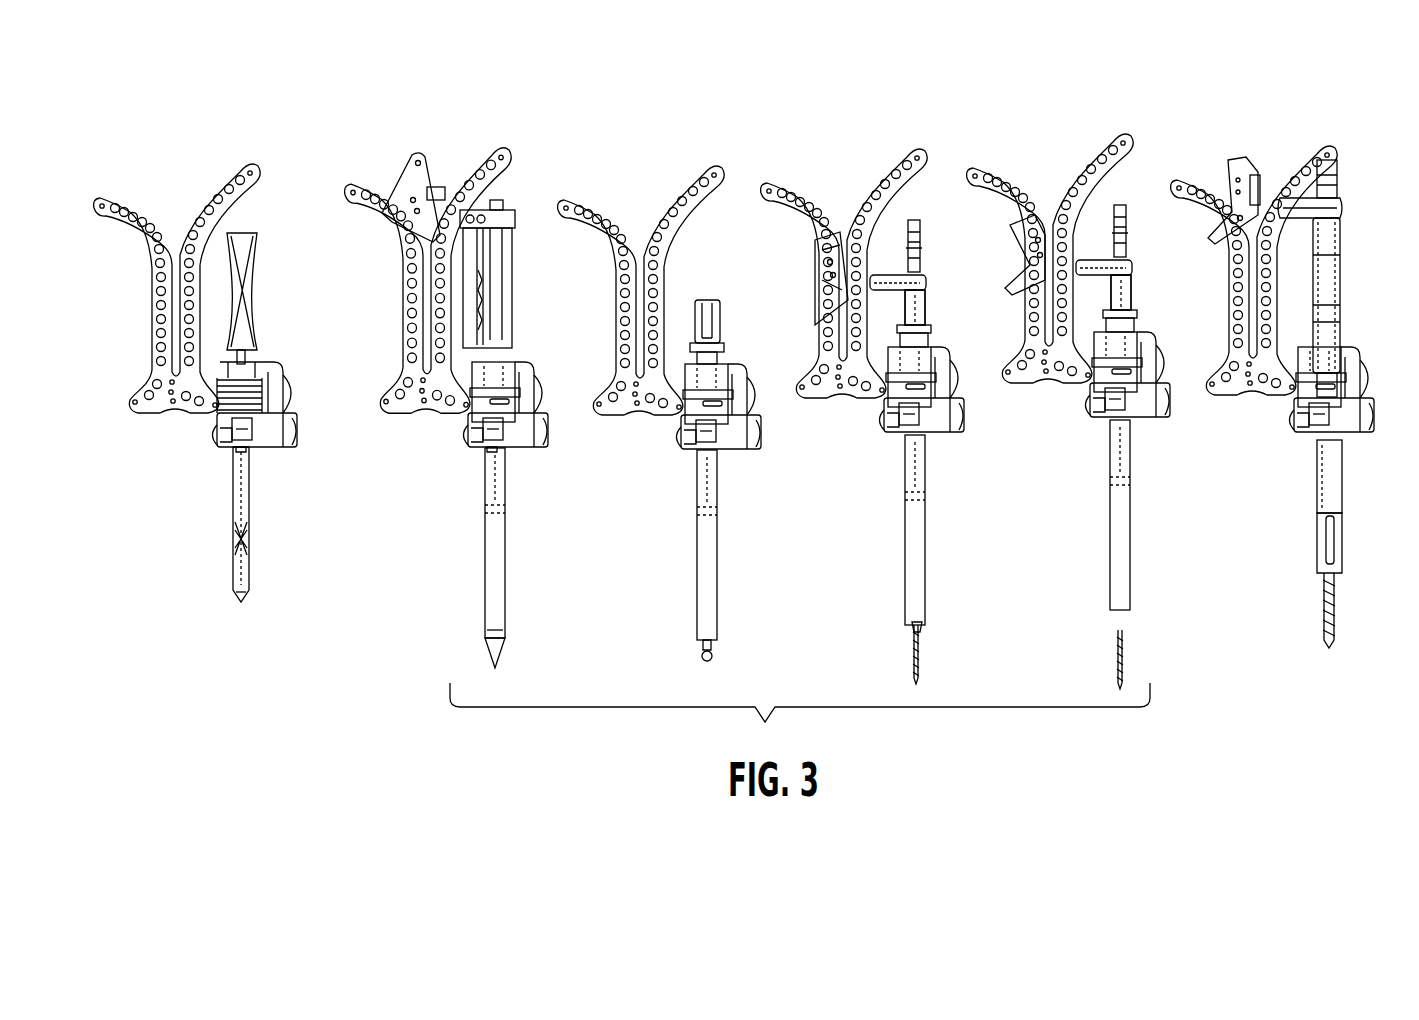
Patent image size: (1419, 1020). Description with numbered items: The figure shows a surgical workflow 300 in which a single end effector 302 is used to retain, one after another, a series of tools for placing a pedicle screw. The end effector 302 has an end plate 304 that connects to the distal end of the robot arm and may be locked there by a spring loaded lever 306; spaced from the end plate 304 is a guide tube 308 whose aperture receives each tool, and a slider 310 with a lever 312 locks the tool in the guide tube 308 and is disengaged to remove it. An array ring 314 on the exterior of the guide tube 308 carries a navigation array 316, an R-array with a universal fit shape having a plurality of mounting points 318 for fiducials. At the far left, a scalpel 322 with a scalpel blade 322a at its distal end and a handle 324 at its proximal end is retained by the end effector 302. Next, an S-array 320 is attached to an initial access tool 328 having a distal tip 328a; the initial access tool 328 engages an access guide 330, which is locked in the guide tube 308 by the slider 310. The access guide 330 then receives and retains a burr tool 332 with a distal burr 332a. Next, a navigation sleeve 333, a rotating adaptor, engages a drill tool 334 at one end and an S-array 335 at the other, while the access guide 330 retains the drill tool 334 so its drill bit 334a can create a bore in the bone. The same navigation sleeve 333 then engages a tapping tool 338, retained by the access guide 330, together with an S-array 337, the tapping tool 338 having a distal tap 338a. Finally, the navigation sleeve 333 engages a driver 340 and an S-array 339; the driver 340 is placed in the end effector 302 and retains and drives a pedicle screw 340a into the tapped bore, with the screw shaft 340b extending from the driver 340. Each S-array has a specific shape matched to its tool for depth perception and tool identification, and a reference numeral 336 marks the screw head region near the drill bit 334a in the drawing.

The surgical workflow 300 is at (255, 95).
The end effector 302 is at (816, 403).
The end plate 304 is at (428, 429).
The spring loaded lever 306 is at (401, 346).
The guide tube 308 is at (321, 488).
The slider 310 is at (298, 449).
The lever 312 is at (222, 445).
The array ring 314 is at (258, 397).
The navigation array 316 is at (716, 247).
The mounting points 318 is at (650, 197).
The S-array 320 is at (410, 182).
The scalpel 322 is at (255, 488).
The scalpel blade 322a is at (248, 580).
The handle 324 is at (262, 280).
The initial access tool 328 is at (516, 280).
The distal tip 328a is at (495, 665).
The access guide 330 is at (842, 530).
The burr tool 332 is at (728, 318).
The burr 332a is at (718, 663).
The navigation sleeve 333 is at (1128, 248).
The drill tool 334 is at (928, 300).
The drill bit 334a is at (924, 660).
The S-array 335 is at (822, 255).
The screw head 336 is at (928, 643).
The S-array 337 is at (1032, 227).
The tapping tool 338 is at (1133, 282).
The tap 338a is at (1130, 648).
The S-array 339 is at (1237, 178).
The driver 340 is at (1340, 282).
The pedicle screw 340a is at (1338, 612).
The instrument rod 340b is at (1318, 470).